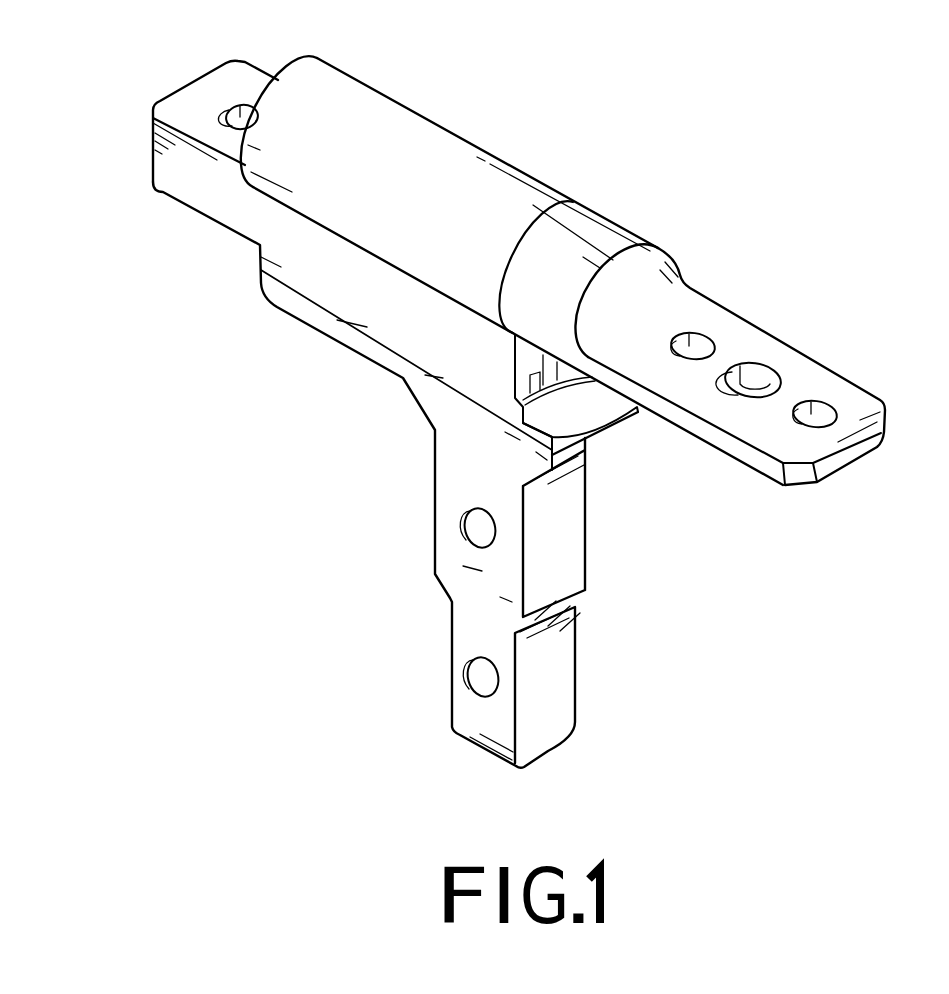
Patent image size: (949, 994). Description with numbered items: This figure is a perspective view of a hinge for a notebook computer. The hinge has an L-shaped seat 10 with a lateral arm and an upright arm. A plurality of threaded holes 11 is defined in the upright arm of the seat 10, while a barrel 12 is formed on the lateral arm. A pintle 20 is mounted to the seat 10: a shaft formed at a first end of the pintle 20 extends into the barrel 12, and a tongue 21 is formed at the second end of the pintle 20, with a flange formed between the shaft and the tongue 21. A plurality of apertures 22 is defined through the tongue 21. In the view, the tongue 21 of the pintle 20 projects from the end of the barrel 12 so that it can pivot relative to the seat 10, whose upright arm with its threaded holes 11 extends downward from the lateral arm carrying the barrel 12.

The L-shaped seat 10 is at (560, 667).
The threaded holes 11 is at (468, 530).
The barrel 12 is at (435, 143).
The pintle 20 is at (757, 338).
The tongue 21 is at (820, 382).
The apertures 22 is at (757, 375).